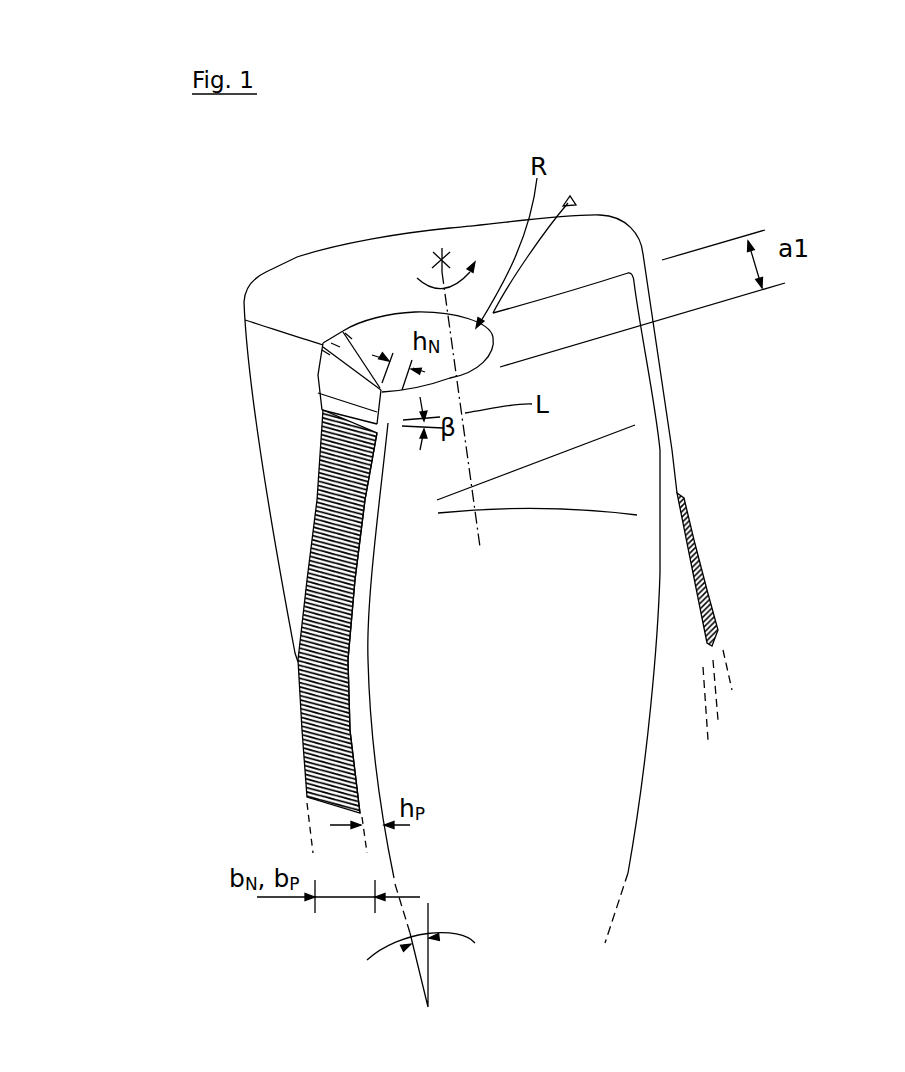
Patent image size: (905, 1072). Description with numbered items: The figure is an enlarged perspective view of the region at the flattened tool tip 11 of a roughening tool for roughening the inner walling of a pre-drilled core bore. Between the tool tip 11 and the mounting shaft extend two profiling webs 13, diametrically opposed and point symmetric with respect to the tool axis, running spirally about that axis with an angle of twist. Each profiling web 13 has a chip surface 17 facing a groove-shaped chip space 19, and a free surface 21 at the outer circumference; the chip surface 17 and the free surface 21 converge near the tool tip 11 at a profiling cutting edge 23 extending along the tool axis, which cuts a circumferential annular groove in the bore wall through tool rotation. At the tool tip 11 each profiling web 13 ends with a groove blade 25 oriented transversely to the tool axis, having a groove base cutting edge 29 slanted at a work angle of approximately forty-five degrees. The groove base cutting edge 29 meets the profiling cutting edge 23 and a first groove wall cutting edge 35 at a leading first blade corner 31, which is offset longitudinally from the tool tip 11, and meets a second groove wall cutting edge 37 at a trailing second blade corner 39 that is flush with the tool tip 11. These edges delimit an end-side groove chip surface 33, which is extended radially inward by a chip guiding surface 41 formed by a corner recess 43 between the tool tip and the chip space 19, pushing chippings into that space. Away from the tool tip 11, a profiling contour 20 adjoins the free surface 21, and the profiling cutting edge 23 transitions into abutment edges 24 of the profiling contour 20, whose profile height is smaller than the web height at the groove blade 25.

The tool tip 11 is at (297, 280).
The profiling webs 13 is at (274, 443).
The chip surface 17 is at (387, 424).
The chip space 19 is at (602, 586).
The profiling contour 20 is at (318, 533).
The free surface 21 is at (318, 372).
The profiling cutting edge 23 is at (318, 402).
The abutment edges 24 is at (350, 578).
The groove blade 25 is at (78, 168).
The groove base cutting edge 29 is at (331, 343).
The first blade corner 31 is at (318, 384).
The groove chip surface 33 is at (383, 323).
The first groove wall cutting edge 35 is at (322, 350).
The second groove wall cutting edge 37 is at (345, 333).
The second blade corner 39 is at (343, 330).
The chip guiding surface 41 is at (350, 330).
The corner recess 43 is at (580, 203).